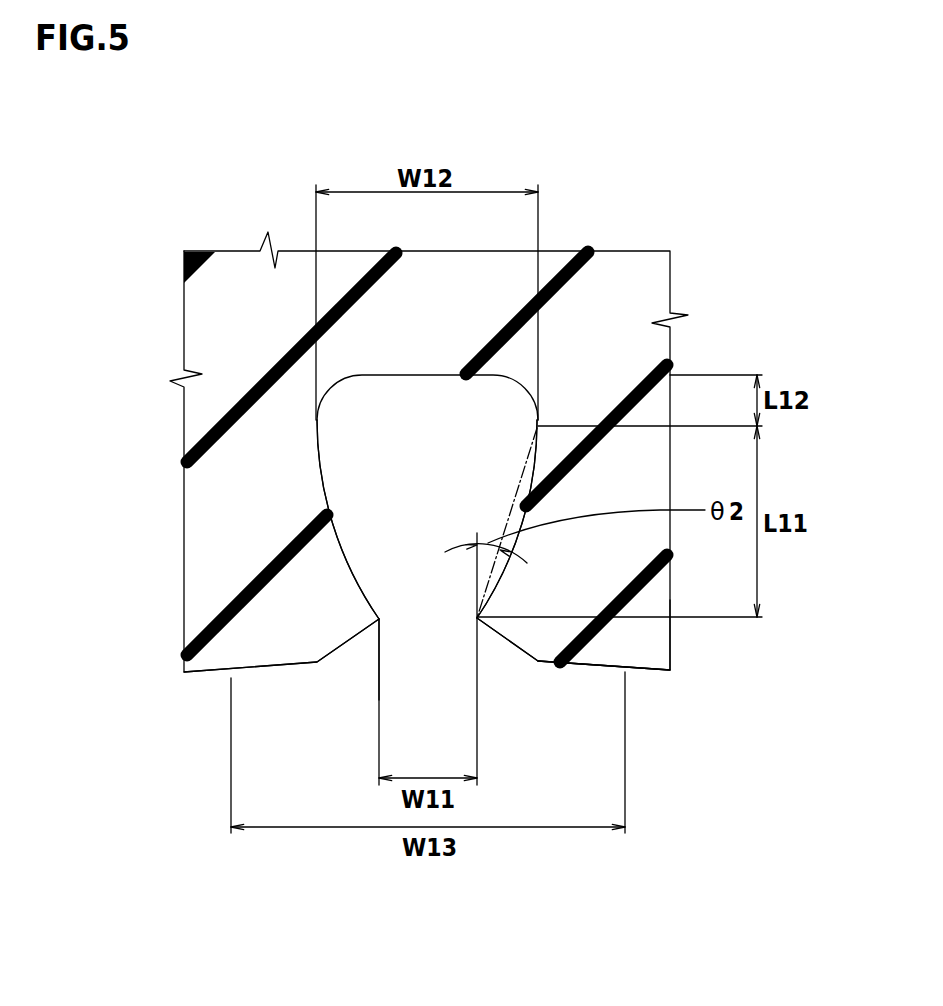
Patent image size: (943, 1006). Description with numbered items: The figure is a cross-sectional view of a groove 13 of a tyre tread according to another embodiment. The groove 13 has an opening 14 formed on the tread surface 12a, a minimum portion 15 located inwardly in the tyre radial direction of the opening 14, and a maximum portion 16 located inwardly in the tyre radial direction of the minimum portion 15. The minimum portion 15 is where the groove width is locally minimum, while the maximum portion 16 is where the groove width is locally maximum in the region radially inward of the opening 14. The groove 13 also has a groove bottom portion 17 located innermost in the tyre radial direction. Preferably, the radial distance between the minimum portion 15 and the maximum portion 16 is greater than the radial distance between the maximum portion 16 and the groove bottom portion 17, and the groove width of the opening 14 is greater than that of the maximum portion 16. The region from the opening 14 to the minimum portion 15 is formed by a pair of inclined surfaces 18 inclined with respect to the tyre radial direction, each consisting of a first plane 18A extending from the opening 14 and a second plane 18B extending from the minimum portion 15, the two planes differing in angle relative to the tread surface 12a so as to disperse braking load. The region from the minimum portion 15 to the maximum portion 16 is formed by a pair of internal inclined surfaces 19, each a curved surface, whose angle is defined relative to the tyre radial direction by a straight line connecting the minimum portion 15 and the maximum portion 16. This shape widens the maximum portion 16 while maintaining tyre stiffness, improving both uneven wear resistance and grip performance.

The tread surface 12a is at (652, 672).
The groove 13 is at (349, 681).
The opening 14 is at (626, 672).
The minimum portion 15 is at (477, 618).
The maximum portion 16 is at (537, 428).
The groove bottom portion 17 is at (427, 378).
The inclined surfaces 18 is at (573, 712).
The first plane 18A is at (596, 666).
The second plane 18B is at (505, 640).
The internal inclined surfaces 19 is at (359, 550).